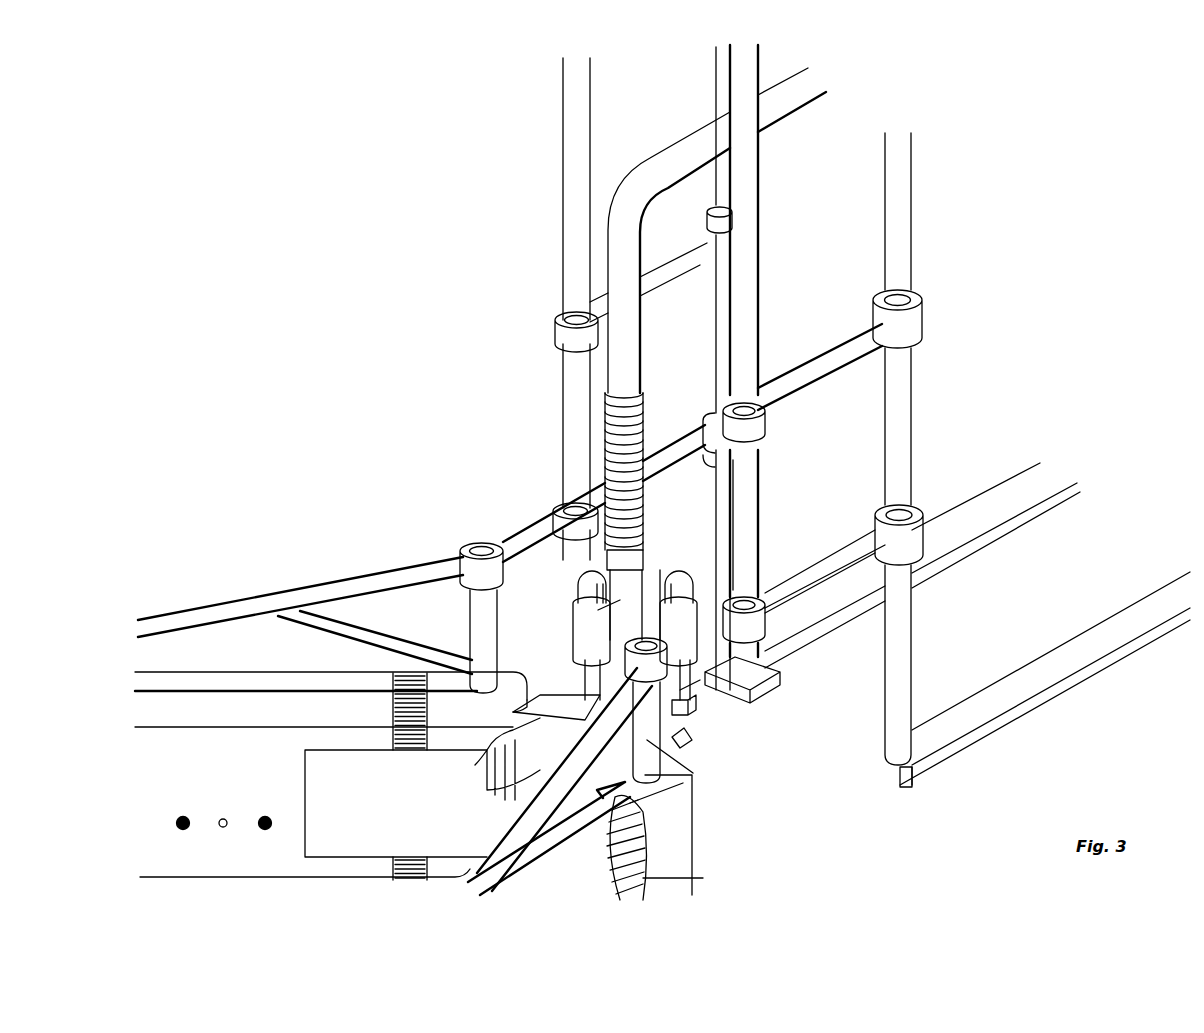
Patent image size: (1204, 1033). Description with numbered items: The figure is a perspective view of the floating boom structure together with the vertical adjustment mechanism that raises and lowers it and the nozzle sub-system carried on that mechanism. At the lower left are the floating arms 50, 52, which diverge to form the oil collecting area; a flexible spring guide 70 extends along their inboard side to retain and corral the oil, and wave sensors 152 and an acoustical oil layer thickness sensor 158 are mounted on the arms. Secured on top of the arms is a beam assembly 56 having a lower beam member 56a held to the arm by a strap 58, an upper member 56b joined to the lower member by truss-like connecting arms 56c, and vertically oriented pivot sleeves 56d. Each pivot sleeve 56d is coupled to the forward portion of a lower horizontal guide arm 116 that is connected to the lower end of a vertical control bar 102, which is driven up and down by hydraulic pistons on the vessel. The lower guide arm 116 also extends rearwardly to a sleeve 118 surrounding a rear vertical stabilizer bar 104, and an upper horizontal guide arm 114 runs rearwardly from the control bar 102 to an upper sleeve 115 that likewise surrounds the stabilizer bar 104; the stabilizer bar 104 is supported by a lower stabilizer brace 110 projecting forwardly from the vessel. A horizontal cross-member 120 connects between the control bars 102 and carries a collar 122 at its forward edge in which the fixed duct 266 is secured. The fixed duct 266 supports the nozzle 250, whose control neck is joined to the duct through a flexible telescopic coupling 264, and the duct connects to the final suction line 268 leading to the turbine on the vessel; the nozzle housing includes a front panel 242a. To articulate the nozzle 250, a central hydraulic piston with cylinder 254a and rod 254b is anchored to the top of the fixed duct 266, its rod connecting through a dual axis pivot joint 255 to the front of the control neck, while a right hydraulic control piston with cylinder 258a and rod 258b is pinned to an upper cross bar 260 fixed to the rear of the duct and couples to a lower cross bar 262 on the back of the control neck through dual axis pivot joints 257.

The floating arm 50 is at (182, 707).
The floating arm 52 is at (668, 833).
The beam assembly 56 is at (293, 573).
The lower beam member 56a is at (243, 682).
The upper beam member 56b is at (257, 603).
The truss-like connecting arms 56c is at (377, 600).
The pivot sleeves 56d is at (482, 617).
The strap 58 is at (407, 690).
The flexible spring guide 70 is at (345, 770).
The vertical control bar 102 is at (573, 140).
The rear vertical stabilizer bar 104 is at (722, 83).
The lower stabilizer brace 110 is at (995, 492).
The upper horizontal guide arm 114 is at (692, 257).
The upper sleeve 115 is at (712, 225).
The lower horizontal guide arm 116 is at (692, 443).
The sleeve 118 is at (713, 457).
The horizontal cross-member 120 is at (657, 558).
The collar 122 is at (590, 582).
The wave sensors 152 is at (178, 830).
The acoustical oil layer thickness sensor 158 is at (223, 818).
The front panel 242a is at (490, 772).
The nozzle 250 is at (528, 777).
The hydraulic cylinder 254a is at (598, 615).
The rod 254b is at (513, 713).
The dual axis pivot joint 255 is at (588, 710).
The dual axis pivot joints 257 is at (697, 727).
The hydraulic cylinder 258a is at (757, 663).
The rod 258b is at (687, 690).
The upper cross bar 260 is at (757, 533).
The lower cross bar 262 is at (696, 707).
The flexible telescopic coupling 264 is at (587, 667).
The fixed duct 266 is at (623, 593).
The final suction line 268 is at (620, 423).